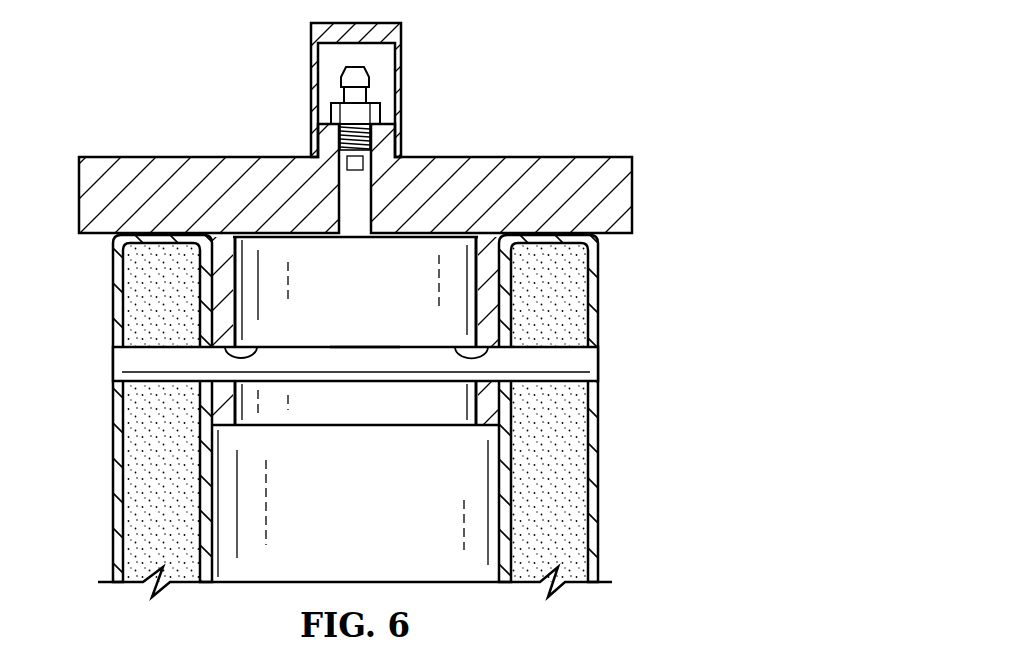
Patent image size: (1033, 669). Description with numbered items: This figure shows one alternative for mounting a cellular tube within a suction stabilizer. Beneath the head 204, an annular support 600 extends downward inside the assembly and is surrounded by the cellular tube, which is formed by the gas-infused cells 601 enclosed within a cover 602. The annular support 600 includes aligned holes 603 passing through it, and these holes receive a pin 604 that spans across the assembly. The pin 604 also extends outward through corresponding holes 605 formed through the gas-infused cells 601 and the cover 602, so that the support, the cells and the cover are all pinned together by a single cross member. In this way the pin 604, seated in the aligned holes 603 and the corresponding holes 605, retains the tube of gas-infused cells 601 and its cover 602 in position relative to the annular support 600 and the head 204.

The head 204 is at (79, 204).
The annular support 600 is at (493, 425).
The gas-infused cells 601 is at (572, 443).
The cover 602 is at (113, 514).
The aligned holes 603 is at (256, 347).
The pin 604 is at (370, 347).
The corresponding holes 605 is at (113, 362).